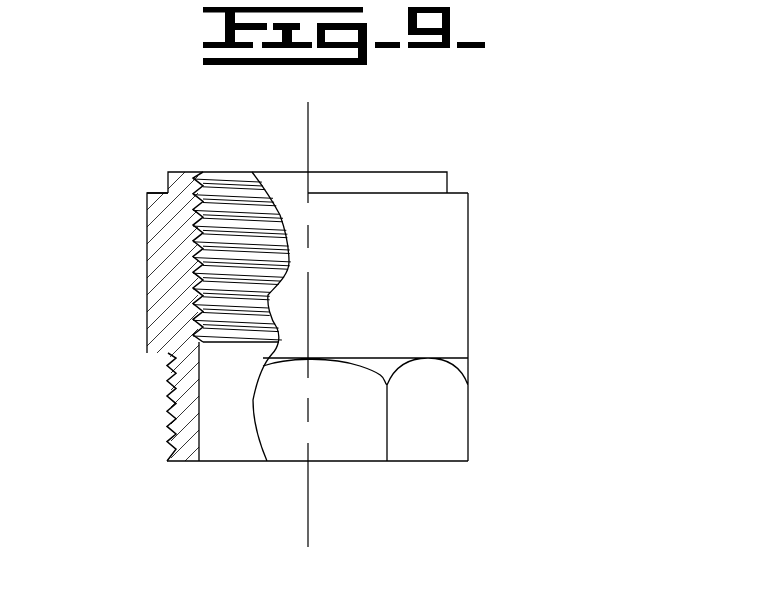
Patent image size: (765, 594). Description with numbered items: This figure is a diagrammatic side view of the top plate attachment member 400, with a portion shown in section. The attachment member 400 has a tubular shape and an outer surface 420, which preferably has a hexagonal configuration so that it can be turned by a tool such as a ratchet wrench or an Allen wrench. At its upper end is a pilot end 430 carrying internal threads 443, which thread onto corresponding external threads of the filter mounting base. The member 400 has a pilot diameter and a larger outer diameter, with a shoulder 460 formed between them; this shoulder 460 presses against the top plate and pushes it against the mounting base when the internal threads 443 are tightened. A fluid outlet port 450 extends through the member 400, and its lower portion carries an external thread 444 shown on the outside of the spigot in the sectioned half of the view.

The top plate attachment member 400 is at (518, 312).
The outer surface 420 is at (468, 275).
The pilot end 430 is at (392, 172).
The internal threads 443 is at (202, 276).
The external thread 444 is at (167, 391).
The fluid outlet port 450 is at (223, 436).
The shoulder 460 is at (462, 193).